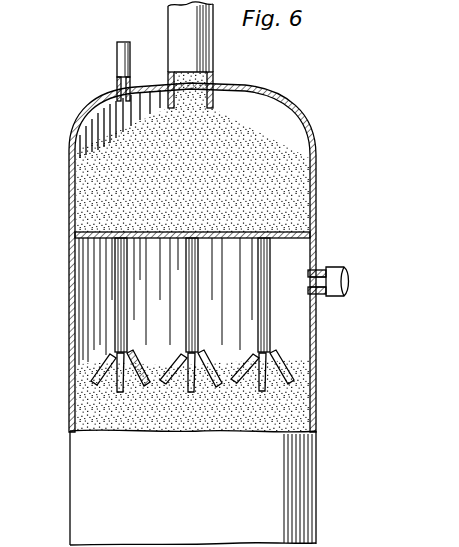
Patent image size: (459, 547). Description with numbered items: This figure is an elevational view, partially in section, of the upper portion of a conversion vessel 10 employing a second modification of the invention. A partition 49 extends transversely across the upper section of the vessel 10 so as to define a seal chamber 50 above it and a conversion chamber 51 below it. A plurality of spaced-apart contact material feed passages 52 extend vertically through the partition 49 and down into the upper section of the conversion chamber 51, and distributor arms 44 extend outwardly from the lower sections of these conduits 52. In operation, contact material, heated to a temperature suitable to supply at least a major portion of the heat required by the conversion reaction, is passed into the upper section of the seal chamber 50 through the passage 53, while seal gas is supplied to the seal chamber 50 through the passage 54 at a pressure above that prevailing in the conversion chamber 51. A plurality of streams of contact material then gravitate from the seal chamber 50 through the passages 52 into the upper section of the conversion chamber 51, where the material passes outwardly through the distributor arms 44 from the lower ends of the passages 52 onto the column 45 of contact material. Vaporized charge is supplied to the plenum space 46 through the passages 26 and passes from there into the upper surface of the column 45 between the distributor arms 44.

The vessel 10 is at (70, 476).
The passages 26 is at (342, 263).
The distributor arms 44 is at (249, 356).
The column 45 is at (296, 426).
The plenum space 46 is at (297, 334).
The partition 49 is at (296, 236).
The seal chamber 50 is at (290, 192).
The conversion chamber 51 is at (292, 391).
The contact material feed passages 52 is at (257, 270).
The passage 53 is at (213, 50).
The passage 54 is at (117, 62).